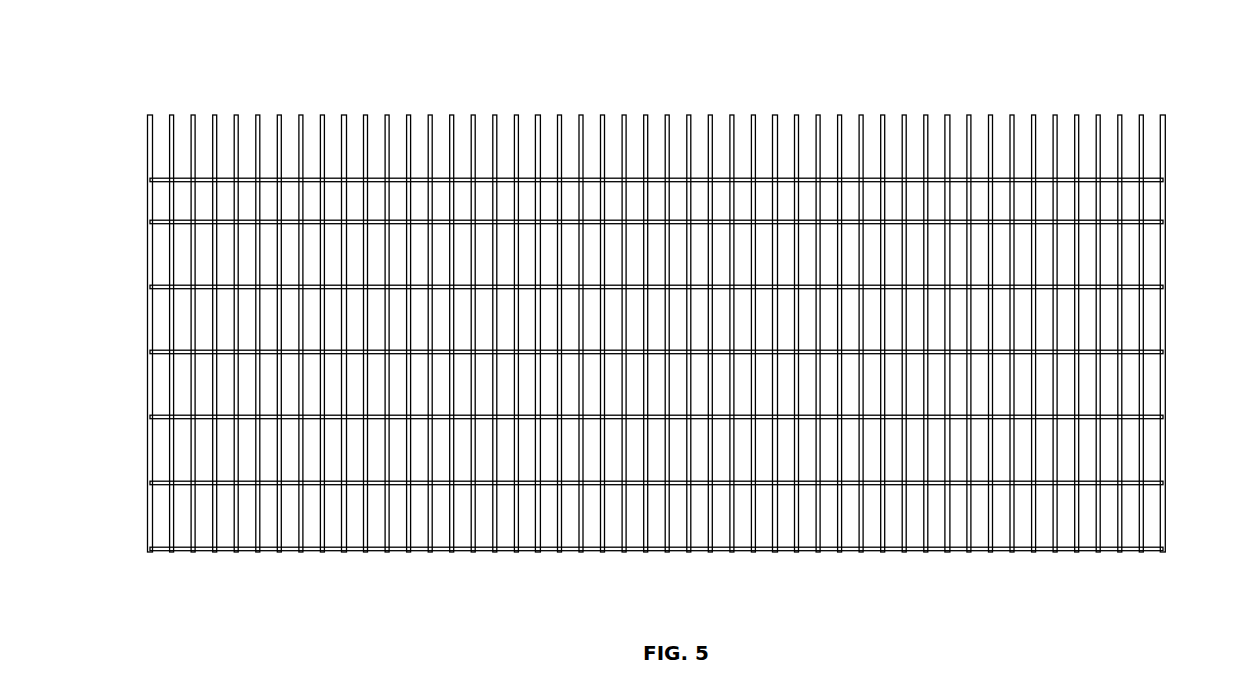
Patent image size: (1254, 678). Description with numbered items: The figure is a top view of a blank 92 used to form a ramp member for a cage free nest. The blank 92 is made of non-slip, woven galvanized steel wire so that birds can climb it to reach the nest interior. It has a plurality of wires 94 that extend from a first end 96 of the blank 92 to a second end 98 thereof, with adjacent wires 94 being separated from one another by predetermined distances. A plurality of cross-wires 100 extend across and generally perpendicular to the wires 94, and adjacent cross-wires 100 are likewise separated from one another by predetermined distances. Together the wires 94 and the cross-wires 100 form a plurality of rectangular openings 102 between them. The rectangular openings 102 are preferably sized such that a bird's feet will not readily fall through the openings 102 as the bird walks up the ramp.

The blank 92 is at (667, 315).
The wires 94 is at (215, 130).
The first end 96 is at (150, 114).
The second end 98 is at (150, 553).
The cross-wires 100 is at (1165, 180).
The rectangular openings 102 is at (183, 193).